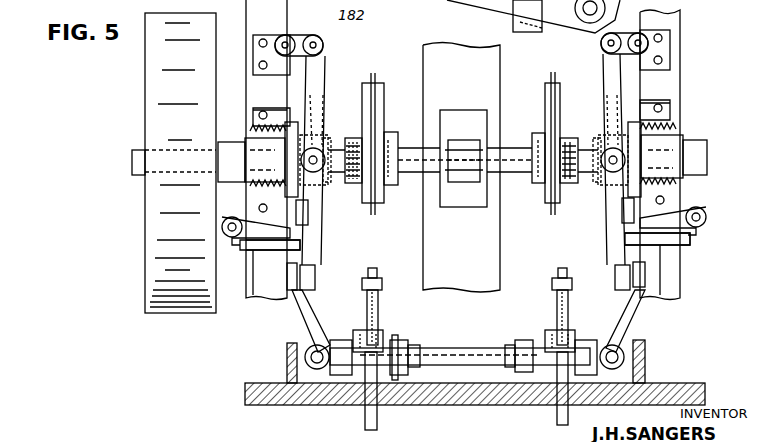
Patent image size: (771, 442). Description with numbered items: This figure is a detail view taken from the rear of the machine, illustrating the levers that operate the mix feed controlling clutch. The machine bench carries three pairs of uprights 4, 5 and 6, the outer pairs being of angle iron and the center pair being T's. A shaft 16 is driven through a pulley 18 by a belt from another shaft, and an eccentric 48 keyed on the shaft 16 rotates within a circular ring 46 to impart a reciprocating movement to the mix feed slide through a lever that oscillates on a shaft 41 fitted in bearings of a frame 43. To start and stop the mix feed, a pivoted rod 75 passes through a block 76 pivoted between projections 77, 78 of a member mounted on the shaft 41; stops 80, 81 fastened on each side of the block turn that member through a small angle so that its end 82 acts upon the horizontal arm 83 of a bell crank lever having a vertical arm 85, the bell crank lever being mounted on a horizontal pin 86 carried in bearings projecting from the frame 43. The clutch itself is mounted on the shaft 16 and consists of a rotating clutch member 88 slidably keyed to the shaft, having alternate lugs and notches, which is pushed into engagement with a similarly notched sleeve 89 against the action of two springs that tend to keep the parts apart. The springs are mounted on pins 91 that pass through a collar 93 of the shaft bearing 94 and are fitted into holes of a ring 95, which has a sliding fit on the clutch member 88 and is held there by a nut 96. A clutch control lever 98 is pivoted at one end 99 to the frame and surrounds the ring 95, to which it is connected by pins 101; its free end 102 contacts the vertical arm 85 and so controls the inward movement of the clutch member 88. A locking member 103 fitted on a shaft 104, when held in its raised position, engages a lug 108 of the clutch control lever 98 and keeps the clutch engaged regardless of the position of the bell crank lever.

The uprights 4 is at (660, 82).
The uprights 5 is at (461, 168).
The uprights 6 is at (273, 150).
The shaft 16 is at (132, 165).
The pulley 18 is at (163, 80).
The shaft 41 is at (472, 366).
The frame 43 is at (287, 366).
The circular ring 46 is at (374, 80).
The eccentric 48 is at (390, 134).
The pivoted rod 75 is at (379, 304).
The block 76 is at (383, 338).
The projection 77 is at (350, 340).
The projection 78 is at (394, 380).
The stop 80 is at (365, 378).
The stop 81 is at (382, 285).
The end 82 is at (408, 348).
The horizontal arm 83 is at (425, 367).
The vertical arm 85 is at (287, 278).
The horizontal pin 86 is at (317, 360).
The rotating clutch member 88 is at (580, 200).
The sleeve 89 is at (356, 183).
The pins 91 is at (272, 125).
The collar 93 is at (463, 147).
The shaft bearing 94 is at (252, 140).
The ring 95 is at (321, 118).
The nut 96 is at (300, 150).
The clutch control lever 98 is at (322, 73).
The end 99 is at (323, 45).
The pins 101 is at (325, 140).
The free end 102 is at (316, 276).
The locking member 103 is at (310, 247).
The shaft 104 is at (222, 227).
The lug 108 is at (309, 216).